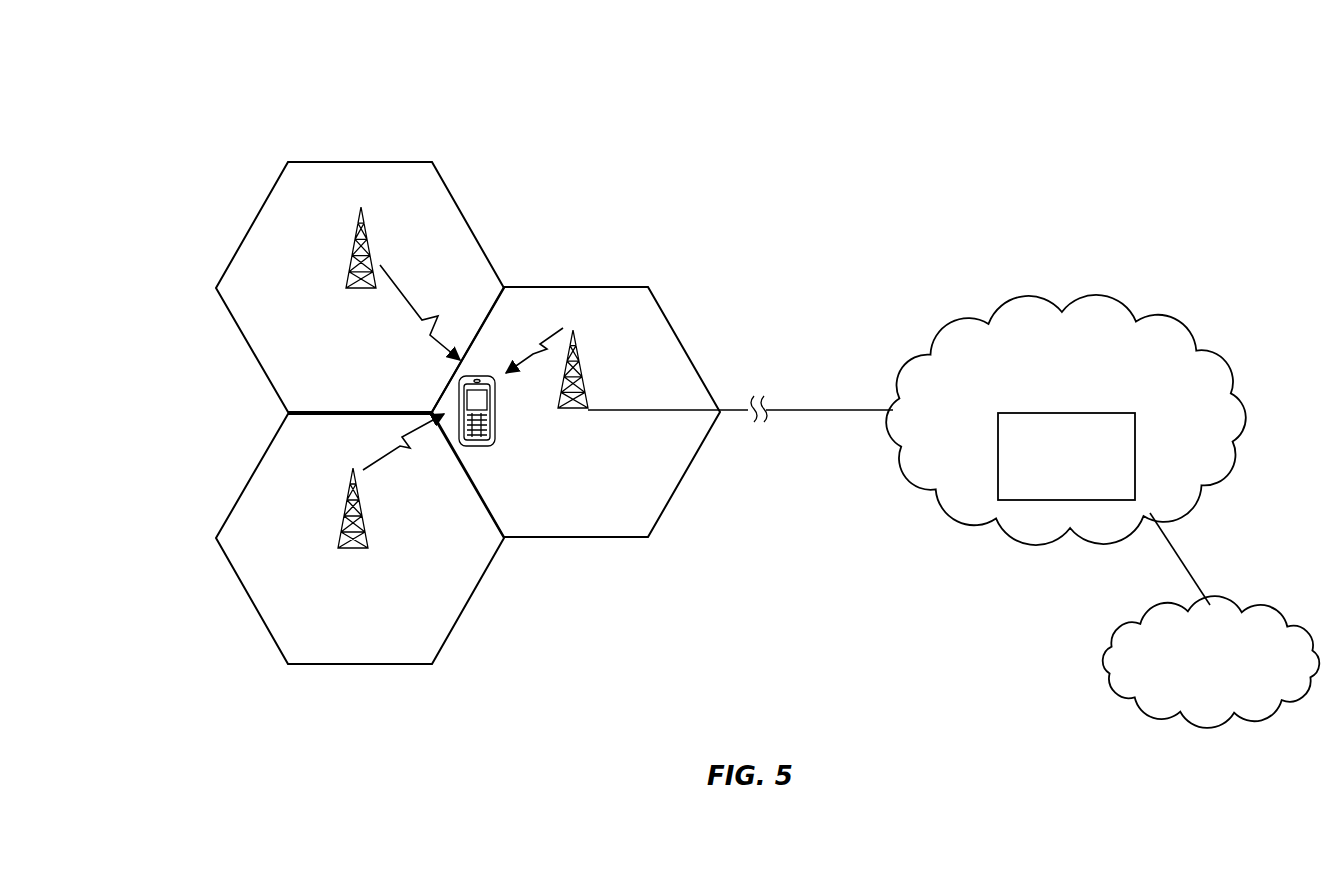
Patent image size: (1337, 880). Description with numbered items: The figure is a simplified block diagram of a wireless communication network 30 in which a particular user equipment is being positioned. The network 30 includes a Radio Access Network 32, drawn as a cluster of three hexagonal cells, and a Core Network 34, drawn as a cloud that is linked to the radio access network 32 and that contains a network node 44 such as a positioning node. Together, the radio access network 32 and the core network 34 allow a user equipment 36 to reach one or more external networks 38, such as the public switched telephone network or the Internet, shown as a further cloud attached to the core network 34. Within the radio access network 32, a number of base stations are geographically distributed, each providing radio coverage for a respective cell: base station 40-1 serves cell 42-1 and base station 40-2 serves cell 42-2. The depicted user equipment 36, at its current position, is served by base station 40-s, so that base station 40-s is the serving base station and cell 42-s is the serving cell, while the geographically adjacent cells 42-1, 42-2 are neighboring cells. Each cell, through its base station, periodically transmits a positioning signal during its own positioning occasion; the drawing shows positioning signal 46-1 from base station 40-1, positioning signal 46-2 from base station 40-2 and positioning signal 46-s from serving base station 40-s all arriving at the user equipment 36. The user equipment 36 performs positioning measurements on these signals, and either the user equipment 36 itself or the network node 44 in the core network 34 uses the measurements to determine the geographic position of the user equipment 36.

The wireless communication network 30 is at (622, 92).
The Radio Access Network 32 is at (145, 304).
The Core Network 34 is at (1066, 420).
The user equipment 36 is at (495, 423).
The external network 38 is at (1211, 662).
The base station 40-1 is at (347, 273).
The base station 40-2 is at (341, 530).
The serving base station 40-s is at (583, 378).
The cell 42-1 is at (452, 196).
The cell 42-2 is at (255, 615).
The serving cell 42-s is at (662, 312).
The network node 44 is at (1066, 456).
The positioning signal 46-1 is at (421, 321).
The positioning signal 46-2 is at (390, 460).
The positioning signal 46-s is at (550, 330).